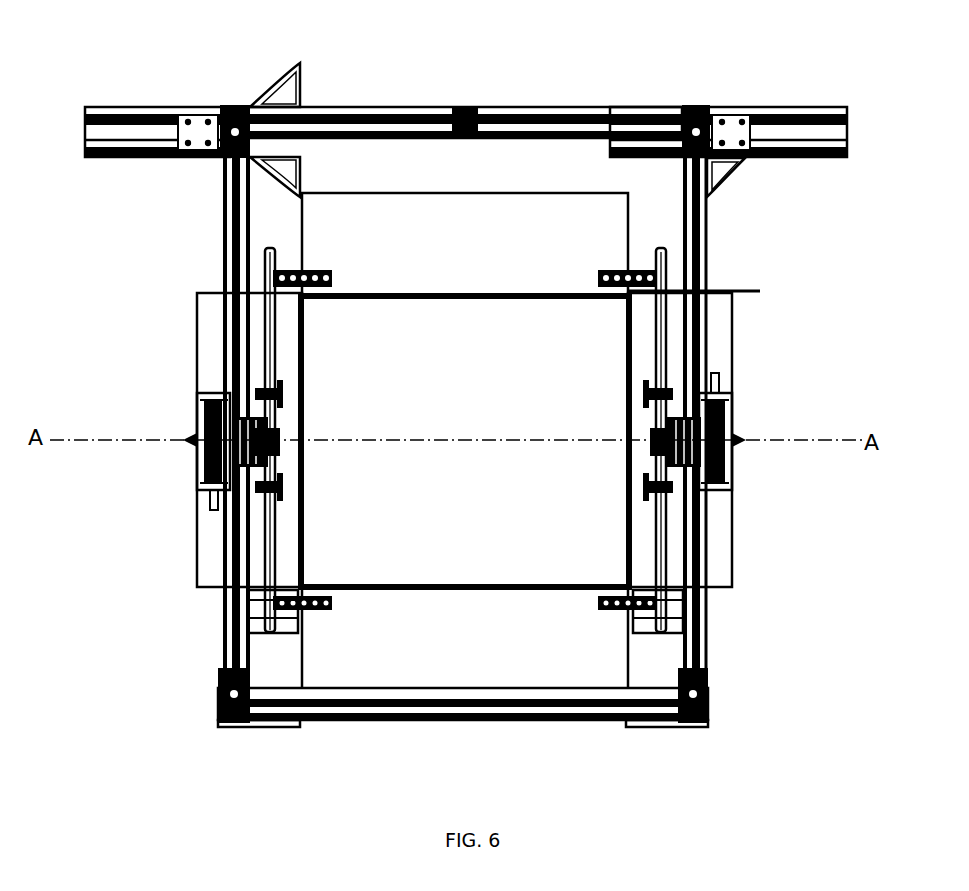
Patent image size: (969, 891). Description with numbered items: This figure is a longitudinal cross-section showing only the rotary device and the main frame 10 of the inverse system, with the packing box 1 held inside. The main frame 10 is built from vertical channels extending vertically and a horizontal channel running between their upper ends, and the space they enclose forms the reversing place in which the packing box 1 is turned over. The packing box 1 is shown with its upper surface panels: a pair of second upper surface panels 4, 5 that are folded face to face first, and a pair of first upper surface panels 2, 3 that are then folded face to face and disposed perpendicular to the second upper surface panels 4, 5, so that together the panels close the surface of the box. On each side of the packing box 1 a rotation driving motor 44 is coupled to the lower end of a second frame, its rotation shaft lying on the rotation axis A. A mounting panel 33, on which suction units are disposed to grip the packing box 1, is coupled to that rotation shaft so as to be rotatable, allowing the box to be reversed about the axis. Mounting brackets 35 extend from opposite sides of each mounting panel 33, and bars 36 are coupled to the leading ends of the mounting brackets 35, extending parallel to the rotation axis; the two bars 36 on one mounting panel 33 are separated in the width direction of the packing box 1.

The packing box 1 is at (583, 538).
The first upper surface panel 2 is at (523, 233).
The first upper surface panel 3 is at (488, 623).
The second upper surface panel 4 is at (238, 337).
The second upper surface panel 5 is at (690, 542).
The main frame 10 is at (806, 156).
The mounting panel 33 is at (281, 415).
The mounting bracket 35 is at (264, 258).
The bar 36 is at (317, 259).
The rotation driving motor 44 is at (180, 459).